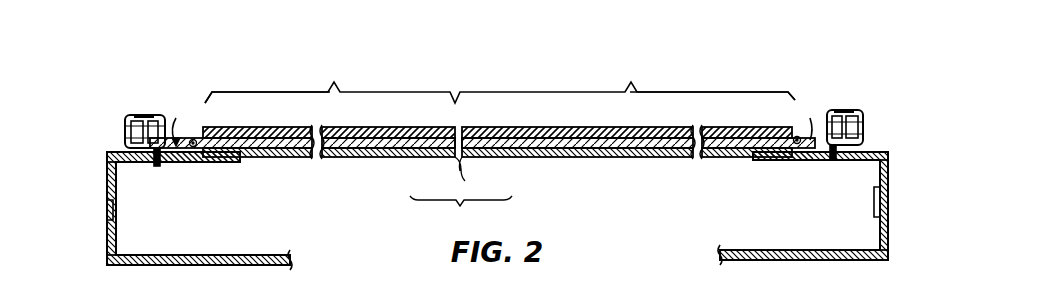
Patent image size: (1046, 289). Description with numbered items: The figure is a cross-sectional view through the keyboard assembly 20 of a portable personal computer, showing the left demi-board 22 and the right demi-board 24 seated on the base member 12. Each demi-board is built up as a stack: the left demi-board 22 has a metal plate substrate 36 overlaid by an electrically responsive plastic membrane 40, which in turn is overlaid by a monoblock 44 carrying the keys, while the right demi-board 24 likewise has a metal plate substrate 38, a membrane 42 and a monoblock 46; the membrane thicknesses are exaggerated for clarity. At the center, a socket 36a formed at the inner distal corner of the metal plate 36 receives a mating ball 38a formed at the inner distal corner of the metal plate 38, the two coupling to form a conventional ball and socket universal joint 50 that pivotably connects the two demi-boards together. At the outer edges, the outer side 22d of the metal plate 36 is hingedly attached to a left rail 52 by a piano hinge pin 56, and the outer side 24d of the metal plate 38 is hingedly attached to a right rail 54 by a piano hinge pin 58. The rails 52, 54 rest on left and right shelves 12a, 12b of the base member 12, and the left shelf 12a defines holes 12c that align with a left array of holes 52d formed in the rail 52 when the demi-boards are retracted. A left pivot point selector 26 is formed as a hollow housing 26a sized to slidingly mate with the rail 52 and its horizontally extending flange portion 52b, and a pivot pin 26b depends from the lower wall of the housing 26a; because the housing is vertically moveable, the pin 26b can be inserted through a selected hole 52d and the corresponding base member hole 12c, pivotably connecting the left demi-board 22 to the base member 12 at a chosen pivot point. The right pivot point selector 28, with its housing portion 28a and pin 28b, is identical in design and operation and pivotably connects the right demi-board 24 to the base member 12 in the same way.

The base member 12 is at (107, 200).
The left shelf 12a is at (206, 162).
The right shelf 12b is at (770, 162).
The holes 12c is at (160, 166).
The keyboard assembly 20 is at (462, 75).
The left demi-board 22 is at (302, 127).
The outer side 22d is at (210, 100).
The right demi-board 24 is at (638, 121).
The outer side 24d is at (792, 94).
The left pivot point selector 26 is at (121, 130).
The hollow housing 26a is at (140, 115).
The pivot pin 26b is at (156, 164).
The right pivot point selector 28 is at (868, 124).
The housing portion 28a is at (836, 114).
The pin 28b is at (832, 160).
The metal plate substrate 36 is at (270, 150).
The socket 36a is at (455, 158).
The metal plate substrate 38 is at (568, 150).
The mating ball 38a is at (467, 158).
The electrically responsive plastic membrane 40 is at (319, 156).
The electrically responsive plastic membrane 42 is at (696, 154).
The monoblock 44 is at (238, 128).
The monoblock 46 is at (644, 126).
The ball and socket universal joint 50 is at (461, 191).
The left rail 52 is at (177, 134).
The flange portion 52b is at (130, 115).
The holes 52d is at (175, 134).
The right rail 54 is at (812, 132).
The piano hinge pin 56 is at (193, 138).
The piano hinge pin 58 is at (798, 134).